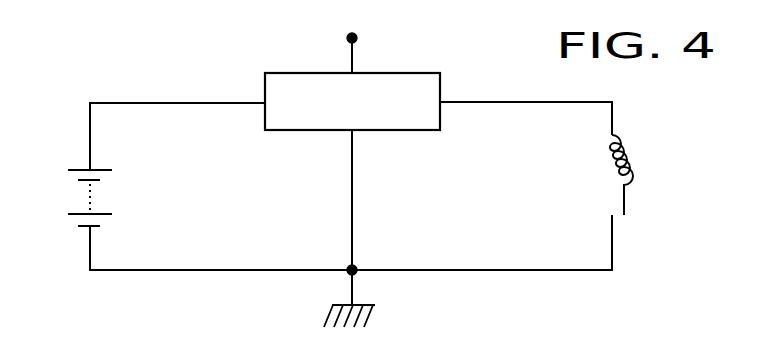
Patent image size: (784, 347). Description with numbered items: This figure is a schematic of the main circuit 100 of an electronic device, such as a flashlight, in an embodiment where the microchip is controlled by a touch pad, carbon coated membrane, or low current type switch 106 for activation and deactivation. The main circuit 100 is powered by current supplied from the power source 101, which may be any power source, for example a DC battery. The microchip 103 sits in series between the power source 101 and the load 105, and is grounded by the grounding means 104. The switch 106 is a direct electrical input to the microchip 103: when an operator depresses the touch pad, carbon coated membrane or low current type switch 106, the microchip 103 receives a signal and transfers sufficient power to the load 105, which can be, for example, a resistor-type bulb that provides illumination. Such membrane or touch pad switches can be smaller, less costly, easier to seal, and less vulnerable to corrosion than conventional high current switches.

The main circuit 100 is at (178, 90).
The power source 101 is at (65, 198).
The microchip 103 is at (416, 130).
The grounding means 104 is at (362, 224).
The load 105 is at (636, 178).
The touch pad switch 106 is at (366, 48).